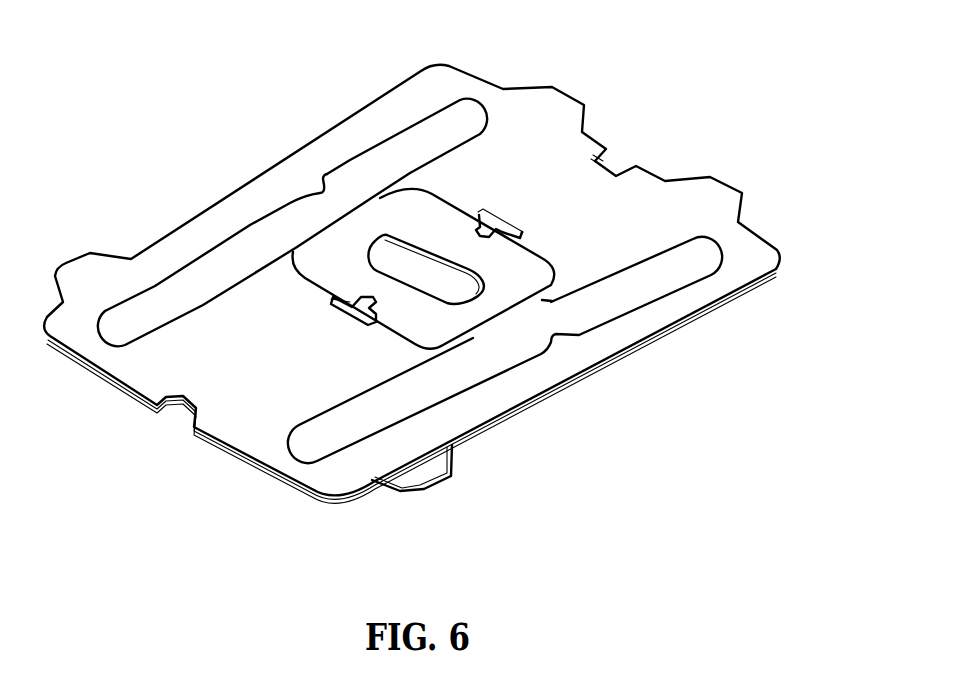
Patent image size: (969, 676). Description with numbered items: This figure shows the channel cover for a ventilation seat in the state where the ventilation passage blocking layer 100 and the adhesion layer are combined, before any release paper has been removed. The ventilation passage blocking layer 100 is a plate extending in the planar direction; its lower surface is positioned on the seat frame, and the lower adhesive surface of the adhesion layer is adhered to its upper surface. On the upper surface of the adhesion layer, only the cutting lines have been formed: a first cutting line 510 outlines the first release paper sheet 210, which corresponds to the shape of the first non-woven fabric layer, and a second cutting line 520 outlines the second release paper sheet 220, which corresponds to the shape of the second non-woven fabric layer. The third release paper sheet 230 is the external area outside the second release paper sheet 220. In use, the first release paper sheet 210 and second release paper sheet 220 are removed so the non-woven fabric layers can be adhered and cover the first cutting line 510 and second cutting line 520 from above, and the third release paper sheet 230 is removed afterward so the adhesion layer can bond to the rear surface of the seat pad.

The ventilation passage blocking layer 100 is at (425, 472).
The first release paper sheet 210 is at (440, 213).
The second release paper sheet 220 is at (388, 152).
The third release paper sheet 230 is at (300, 467).
The first cutting line 510 is at (503, 315).
The second cutting line 520 is at (217, 243).